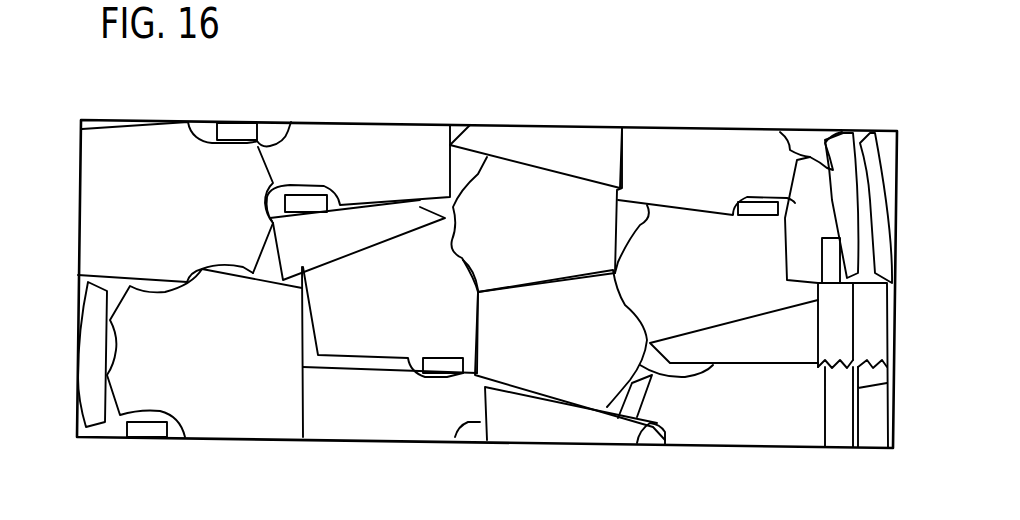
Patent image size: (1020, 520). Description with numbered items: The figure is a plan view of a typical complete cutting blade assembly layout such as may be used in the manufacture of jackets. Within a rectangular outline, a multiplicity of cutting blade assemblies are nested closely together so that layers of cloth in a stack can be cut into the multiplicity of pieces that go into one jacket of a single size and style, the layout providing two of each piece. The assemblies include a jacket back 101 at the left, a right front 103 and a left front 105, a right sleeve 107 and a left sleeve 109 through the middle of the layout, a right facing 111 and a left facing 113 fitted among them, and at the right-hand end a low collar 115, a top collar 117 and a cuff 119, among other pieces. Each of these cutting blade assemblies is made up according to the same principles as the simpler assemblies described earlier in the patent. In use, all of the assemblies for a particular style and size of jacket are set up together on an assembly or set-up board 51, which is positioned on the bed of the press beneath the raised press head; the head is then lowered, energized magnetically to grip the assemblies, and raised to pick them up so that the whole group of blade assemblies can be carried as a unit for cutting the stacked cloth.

The set-up board 51 is at (108, 438).
The jacket back 101 is at (126, 120).
The right front 103 is at (280, 123).
The left front 105 is at (793, 135).
The right sleeve 107 is at (643, 207).
The left sleeve 109 is at (488, 157).
The right facing 111 is at (270, 240).
The left facing 113 is at (463, 127).
The low collar 115 is at (858, 135).
The top collar 117 is at (878, 167).
The cuff 119 is at (887, 343).